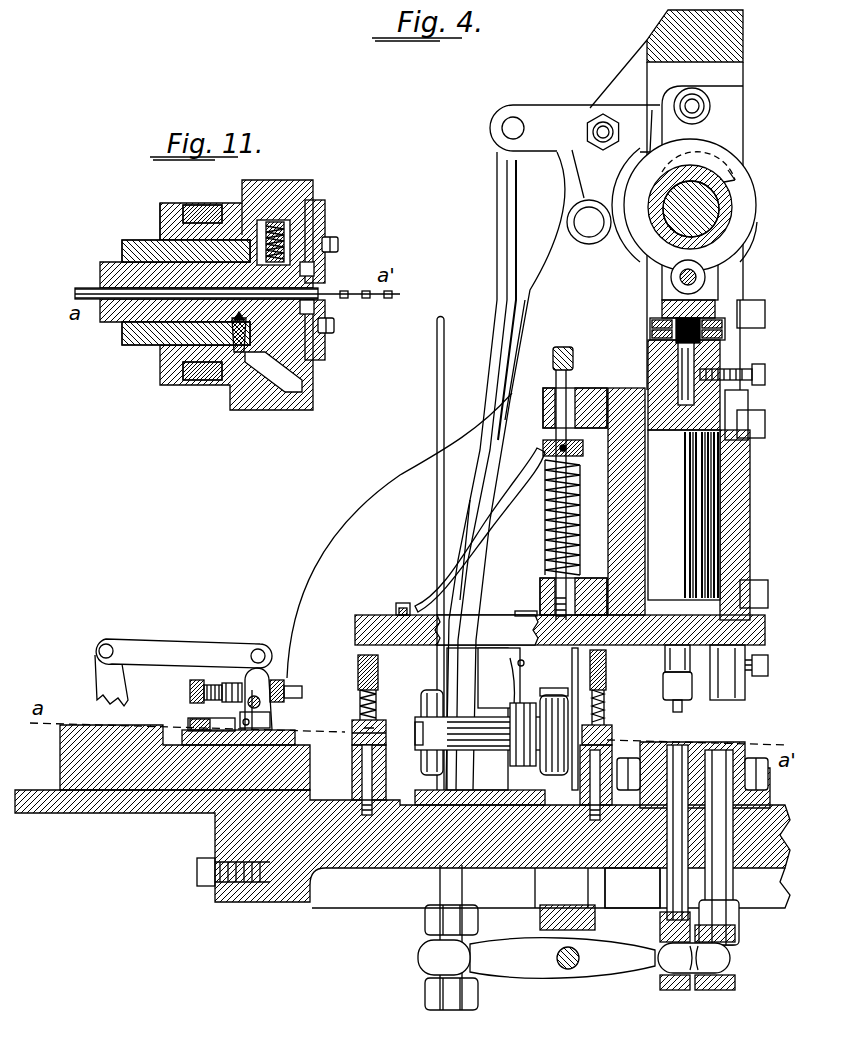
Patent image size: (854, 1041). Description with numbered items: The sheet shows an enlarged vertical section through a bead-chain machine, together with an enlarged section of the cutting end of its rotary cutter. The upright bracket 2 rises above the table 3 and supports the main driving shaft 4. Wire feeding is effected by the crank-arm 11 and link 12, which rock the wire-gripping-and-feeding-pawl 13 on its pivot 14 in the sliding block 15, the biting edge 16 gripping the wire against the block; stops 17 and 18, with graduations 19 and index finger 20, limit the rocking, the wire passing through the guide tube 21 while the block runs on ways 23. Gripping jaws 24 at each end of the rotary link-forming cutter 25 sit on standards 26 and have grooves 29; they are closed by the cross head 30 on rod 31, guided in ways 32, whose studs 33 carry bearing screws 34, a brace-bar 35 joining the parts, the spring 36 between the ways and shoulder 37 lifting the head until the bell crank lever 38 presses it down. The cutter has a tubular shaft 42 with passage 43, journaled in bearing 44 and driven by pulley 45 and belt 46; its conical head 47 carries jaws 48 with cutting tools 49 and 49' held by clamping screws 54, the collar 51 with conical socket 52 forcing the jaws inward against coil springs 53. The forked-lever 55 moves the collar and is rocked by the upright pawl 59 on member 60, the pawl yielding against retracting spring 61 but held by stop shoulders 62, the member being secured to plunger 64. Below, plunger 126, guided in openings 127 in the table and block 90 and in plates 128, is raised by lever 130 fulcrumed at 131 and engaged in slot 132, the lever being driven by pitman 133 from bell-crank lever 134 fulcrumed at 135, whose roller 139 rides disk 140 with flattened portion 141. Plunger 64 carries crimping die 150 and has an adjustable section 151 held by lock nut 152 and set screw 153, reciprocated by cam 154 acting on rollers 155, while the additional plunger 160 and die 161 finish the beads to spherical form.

In FIG. 4, the upright bracket 2 is at (728, 47).
In FIG. 4, the main supporting bed or table 3 is at (215, 822).
In FIG. 4, the main driving shaft 4 is at (700, 220).
In FIG. 4, the crank-arm 11 is at (100, 690).
In FIG. 4, the link 12 is at (148, 645).
In FIG. 4, the wire-gripping-and-feeding-pawl 13 is at (268, 672).
In FIG. 4, the pivot 14 is at (257, 700).
In FIG. 4, the sliding block 15 is at (296, 738).
In FIG. 4, the biting edge 16 is at (270, 716).
In FIG. 4, the adjustable limiting stop or screw 17 is at (288, 686).
In FIG. 4, the adjustable limiting stop or screw 18 is at (190, 690).
In FIG. 4, the circumferential graduations 19 is at (207, 683).
In FIG. 4, the index finger 20 is at (232, 682).
In FIG. 4, the guide tube 21 is at (188, 722).
In FIG. 4, the ways 23 is at (162, 798).
In FIG. 4, the gripping jaws 24 is at (352, 729).
In FIG. 4, the rotary link-forming cutter 25 is at (552, 695).
In FIG. 11, the rotary link-forming cutter 25 is at (235, 332).
In FIG. 4, the standards 26 is at (352, 775).
In FIG. 4, the registering grooves 29 is at (381, 732).
In FIG. 4, the cross head 30 is at (493, 626).
In FIG. 4, the upright supporting rod 31 is at (567, 386).
In FIG. 4, the ways 32 is at (543, 416).
In FIG. 4, the pendent studs 33 is at (358, 670).
In FIG. 4, the adjustable bearing members 34 is at (360, 706).
In FIG. 4, the brace-bar 35 is at (497, 529).
In FIG. 4, the retracting spring 36 is at (577, 526).
In FIG. 4, the shoulder 37 is at (543, 445).
In FIG. 4, the bell crank lever 38 is at (563, 346).
In FIG. 4, the tubular shaft 42 is at (416, 746).
In FIG. 11, the tubular shaft 42 is at (118, 256).
In FIG. 11, the central lengthwise passage 43 is at (100, 283).
In FIG. 4, the bearing 44 is at (482, 752).
In FIG. 11, the bearing 44 is at (130, 344).
In FIG. 4, the pulley 45 is at (432, 700).
In FIG. 4, the belt 46 is at (437, 432).
In FIG. 11, the enlarged conical head 47 is at (292, 386).
In FIG. 11, the radially movable jaws 48 is at (300, 210).
In FIG. 11, the cutting tool 49 is at (331, 242).
In FIG. 11, the cutting tool 49' is at (333, 331).
In FIG. 11, the axially movable collar 51 is at (265, 410).
In FIG. 11, the inner conical socket 52 is at (275, 224).
In FIG. 11, the coil springs 53 is at (262, 224).
In FIG. 11, the clamping screws 54 is at (338, 243).
In FIG. 4, the forked-lever 55 is at (544, 712).
In FIG. 11, the forked-lever 55 is at (202, 205).
In FIG. 4, the upright pawl 59 is at (512, 688).
In FIG. 4, the vertically movable member 60 is at (527, 614).
In FIG. 4, the retracting spring 61 is at (512, 672).
In FIG. 4, the stop shoulders 62 is at (525, 663).
In FIG. 4, the plunger 64 is at (705, 530).
In FIG. 4, the block 90 is at (765, 800).
In FIG. 4, the plunger 126 is at (660, 905).
In FIG. 4, the vertically registering openings 127 is at (667, 868).
In FIG. 4, the additional blocks or plates 128 is at (740, 758).
In FIG. 4, the lever 130 is at (625, 974).
In FIG. 4, the fulcrum 131 is at (568, 970).
In FIG. 4, the slot 132 is at (660, 978).
In FIG. 4, the vertically movable rod or pitman 133 is at (500, 372).
In FIG. 4, the bell-crank lever 134 is at (553, 108).
In FIG. 4, the fulcrum 135 is at (605, 124).
In FIG. 4, the roller 139 is at (578, 238).
In FIG. 4, the disk 140 is at (628, 250).
In FIG. 4, the flattened portion 141 is at (752, 242).
In FIG. 4, the bead crimping die 150 is at (678, 702).
In FIG. 4, the adjustable upper section 151 is at (720, 118).
In FIG. 4, the lock nut 152 is at (650, 330).
In FIG. 4, the set screw 153 is at (742, 374).
In FIG. 4, the cam 154 is at (757, 176).
In FIG. 4, the rollers 155 is at (712, 104).
In FIG. 4, the additional plunger 160 is at (735, 890).
In FIG. 4, the coöperative die 161 is at (725, 698).